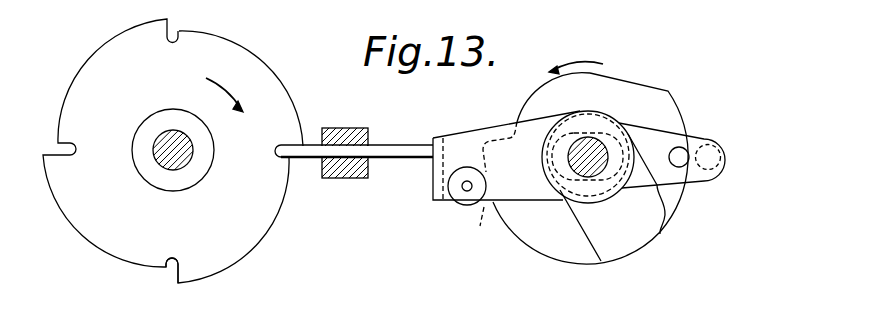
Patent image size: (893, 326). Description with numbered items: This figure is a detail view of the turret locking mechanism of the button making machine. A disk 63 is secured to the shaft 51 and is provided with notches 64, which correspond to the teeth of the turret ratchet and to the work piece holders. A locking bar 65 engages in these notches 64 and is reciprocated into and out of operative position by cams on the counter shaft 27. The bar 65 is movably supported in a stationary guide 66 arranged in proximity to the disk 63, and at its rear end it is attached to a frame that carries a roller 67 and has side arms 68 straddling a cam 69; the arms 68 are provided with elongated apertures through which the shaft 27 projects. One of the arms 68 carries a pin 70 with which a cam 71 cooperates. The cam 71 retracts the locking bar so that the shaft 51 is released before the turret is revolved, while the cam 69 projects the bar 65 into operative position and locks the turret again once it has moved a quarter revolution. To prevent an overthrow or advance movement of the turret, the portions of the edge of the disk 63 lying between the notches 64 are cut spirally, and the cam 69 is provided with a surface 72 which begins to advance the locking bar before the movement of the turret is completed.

The counter shaft 27 is at (592, 163).
The shaft 51 is at (187, 145).
The disk 63 is at (173, 151).
The notches 64 is at (177, 263).
The locking bar 65 is at (397, 155).
The stationary guide 66 is at (332, 167).
The roller 67 is at (465, 205).
The side arms 68 is at (579, 155).
The cam 69 is at (570, 168).
The pin 70 is at (680, 157).
The cam 71 is at (599, 186).
The surface 72 is at (648, 86).